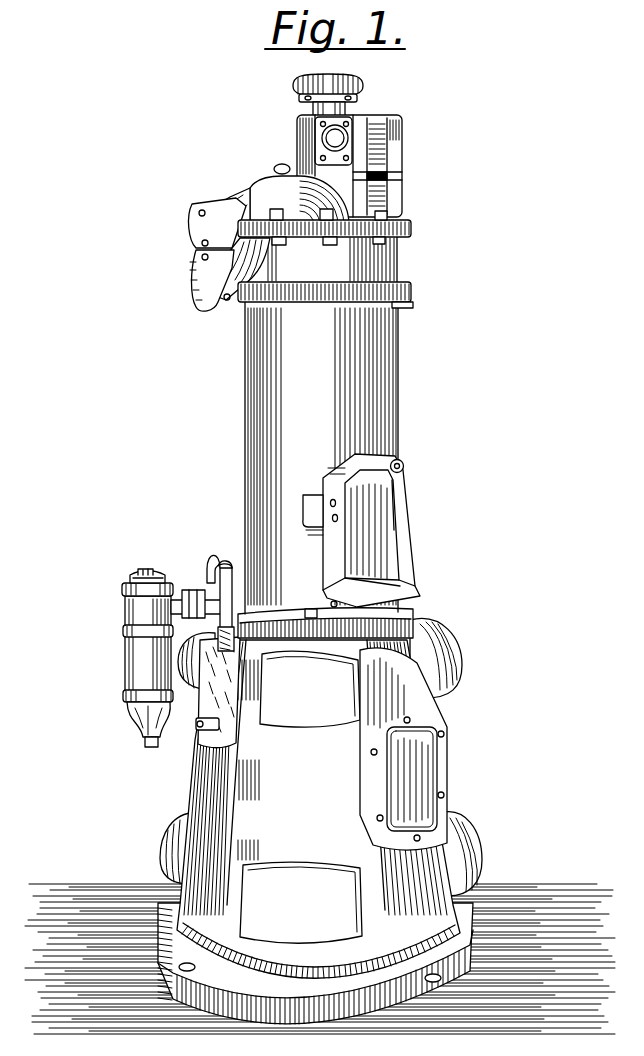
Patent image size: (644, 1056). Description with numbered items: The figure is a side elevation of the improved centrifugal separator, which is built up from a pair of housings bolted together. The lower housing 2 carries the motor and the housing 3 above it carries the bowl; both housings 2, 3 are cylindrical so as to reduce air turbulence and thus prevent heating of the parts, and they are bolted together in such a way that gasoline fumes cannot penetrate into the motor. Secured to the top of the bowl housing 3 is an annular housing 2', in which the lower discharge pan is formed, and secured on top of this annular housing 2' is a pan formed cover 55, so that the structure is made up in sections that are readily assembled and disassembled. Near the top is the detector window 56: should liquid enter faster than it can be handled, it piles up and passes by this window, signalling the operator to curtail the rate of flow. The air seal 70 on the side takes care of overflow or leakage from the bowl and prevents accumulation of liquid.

The housing 2 is at (287, 821).
The annular housing 2' is at (339, 254).
The housing 3 is at (267, 422).
The pan formed cover 55 is at (283, 193).
The detector window 56 is at (338, 140).
The air seal 70 is at (133, 667).